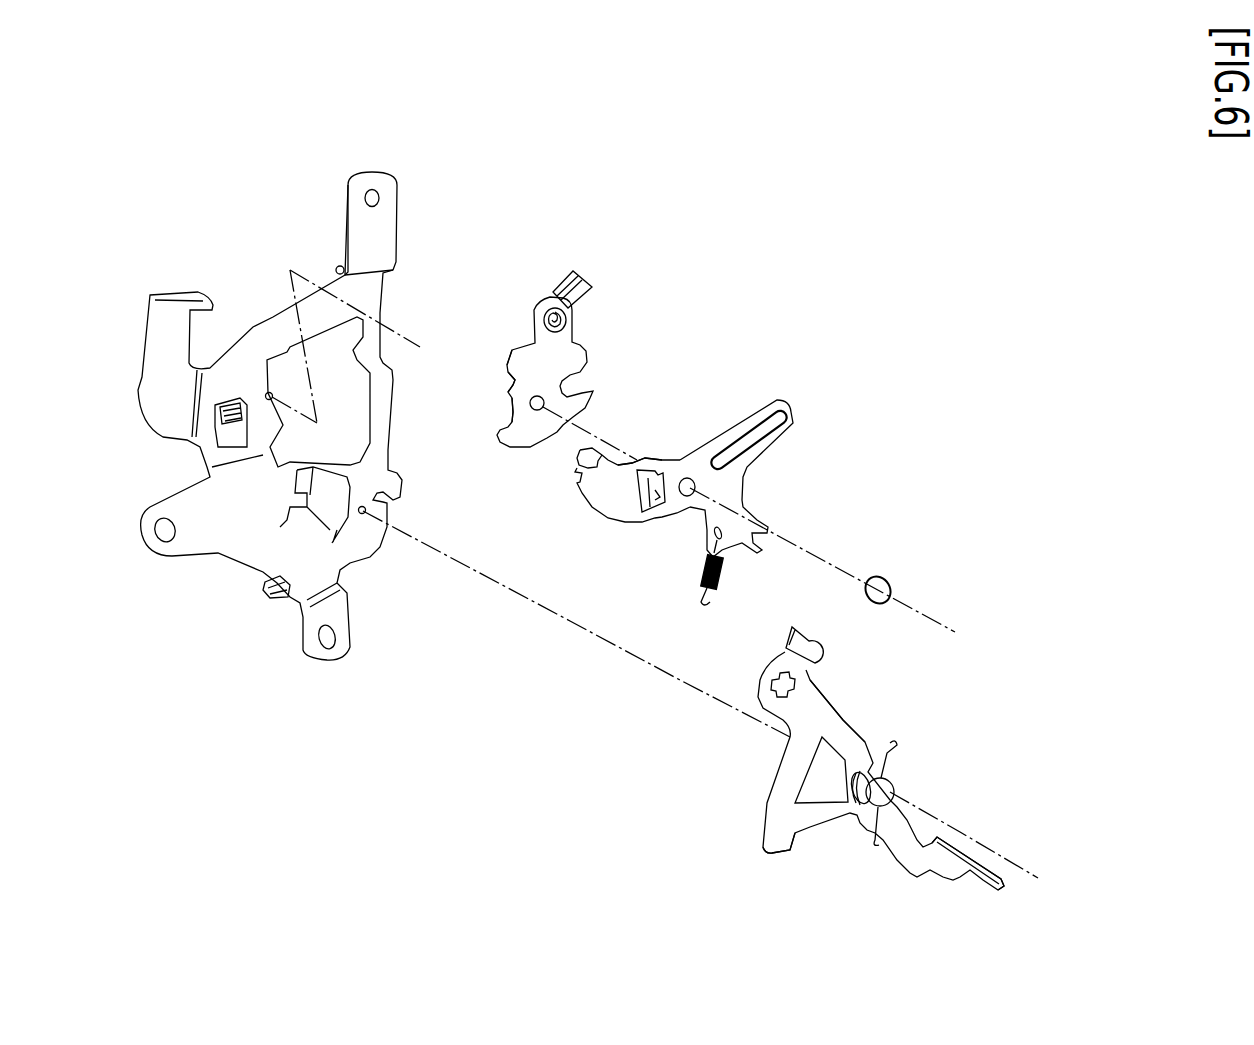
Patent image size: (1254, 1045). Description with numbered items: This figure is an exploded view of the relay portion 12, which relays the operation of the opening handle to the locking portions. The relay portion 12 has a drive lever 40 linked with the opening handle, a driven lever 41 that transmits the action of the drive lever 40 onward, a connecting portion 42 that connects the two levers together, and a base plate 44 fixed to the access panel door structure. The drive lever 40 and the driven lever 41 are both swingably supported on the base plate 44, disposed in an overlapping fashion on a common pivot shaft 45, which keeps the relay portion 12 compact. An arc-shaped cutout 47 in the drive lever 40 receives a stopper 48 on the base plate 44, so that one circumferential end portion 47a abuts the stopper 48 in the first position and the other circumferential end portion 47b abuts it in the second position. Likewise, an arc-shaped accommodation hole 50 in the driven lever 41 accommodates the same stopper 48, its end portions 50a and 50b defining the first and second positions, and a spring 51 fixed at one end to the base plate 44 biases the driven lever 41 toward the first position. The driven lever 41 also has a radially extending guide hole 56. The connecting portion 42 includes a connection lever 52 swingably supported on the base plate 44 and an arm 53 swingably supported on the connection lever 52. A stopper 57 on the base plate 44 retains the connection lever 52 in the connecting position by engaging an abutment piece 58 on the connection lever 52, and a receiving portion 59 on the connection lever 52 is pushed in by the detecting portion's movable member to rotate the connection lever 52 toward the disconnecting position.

The relay portion 12 is at (907, 278).
The drive lever 40 is at (511, 347).
The driven lever 41 is at (693, 455).
The connecting portion 42 is at (755, 790).
The base plate 44 is at (248, 347).
The pivot shaft 45 is at (888, 580).
The cutout 47 is at (508, 403).
The circumferential end portion 47a is at (500, 422).
The other circumferential end portion 47b is at (508, 390).
The stopper 48 is at (215, 420).
The accommodation hole 50 is at (638, 489).
The circumferential end portion 50a is at (653, 510).
The other circumferential end portion 50b is at (646, 470).
The spring 51 is at (723, 573).
The connection lever 52 is at (845, 725).
The arm 53 is at (817, 653).
The guide hole 56 is at (780, 415).
The stopper 57 is at (263, 590).
The abutment piece 58 is at (800, 852).
The receiving portion 59 is at (977, 873).